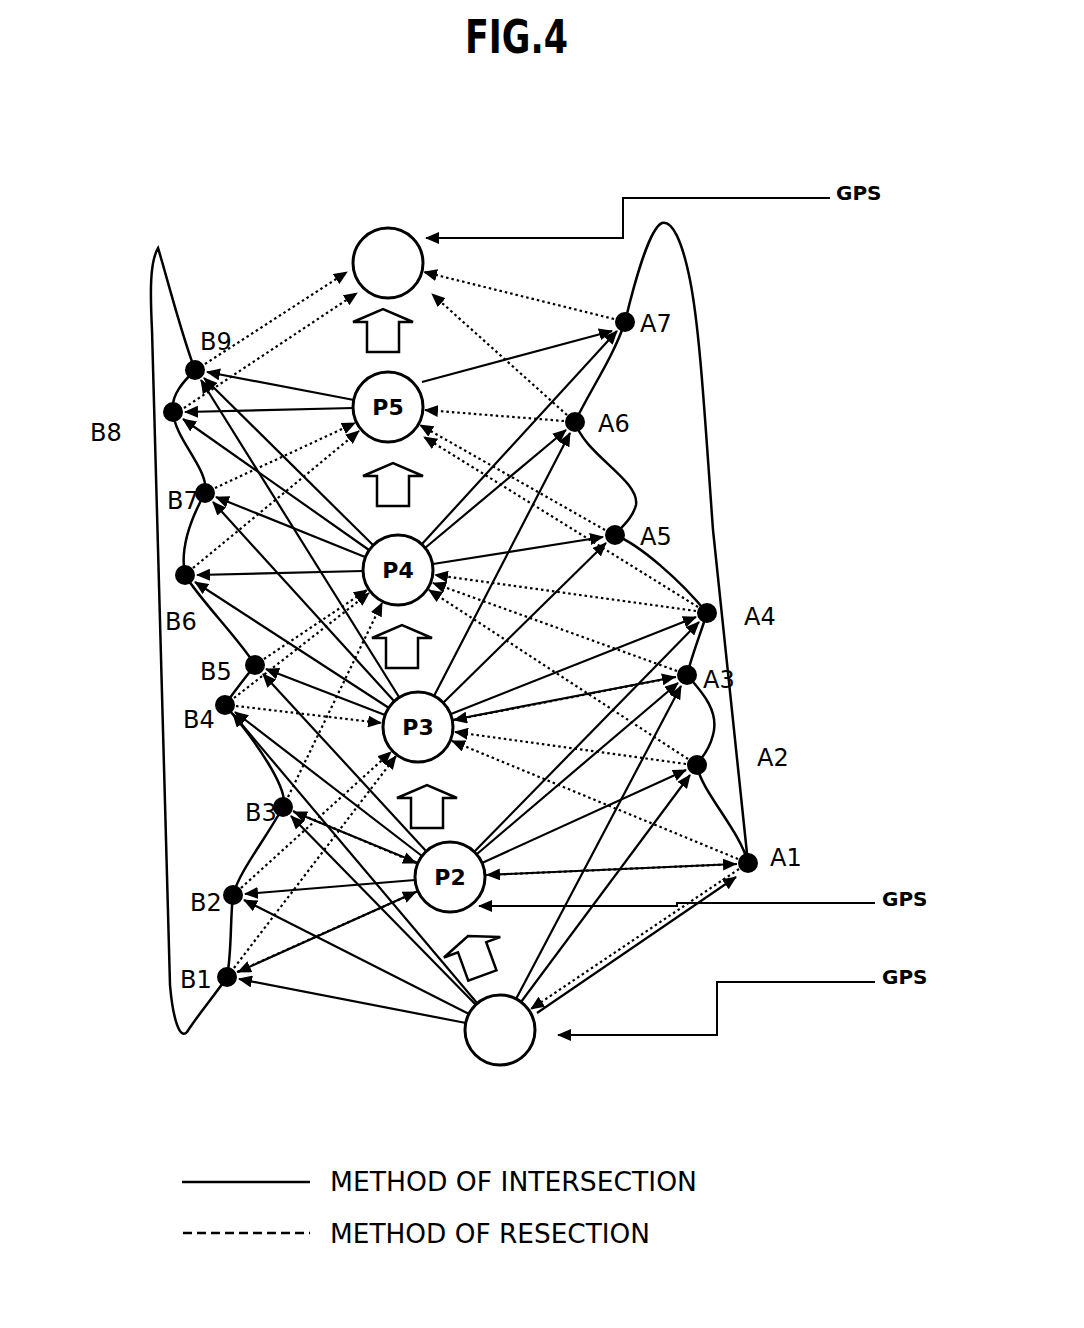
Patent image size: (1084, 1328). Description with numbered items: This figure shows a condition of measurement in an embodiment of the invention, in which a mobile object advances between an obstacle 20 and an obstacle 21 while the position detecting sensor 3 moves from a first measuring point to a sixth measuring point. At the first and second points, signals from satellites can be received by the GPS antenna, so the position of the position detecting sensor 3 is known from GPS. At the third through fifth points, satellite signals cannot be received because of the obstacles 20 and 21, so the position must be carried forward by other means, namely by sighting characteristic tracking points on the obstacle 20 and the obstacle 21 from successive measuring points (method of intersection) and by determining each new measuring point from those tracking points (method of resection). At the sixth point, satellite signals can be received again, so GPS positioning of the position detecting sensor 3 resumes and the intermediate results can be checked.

The position detecting sensor 3 is at (392, 228).
The obstacle 20 is at (703, 425).
The obstacle 21 is at (170, 287).